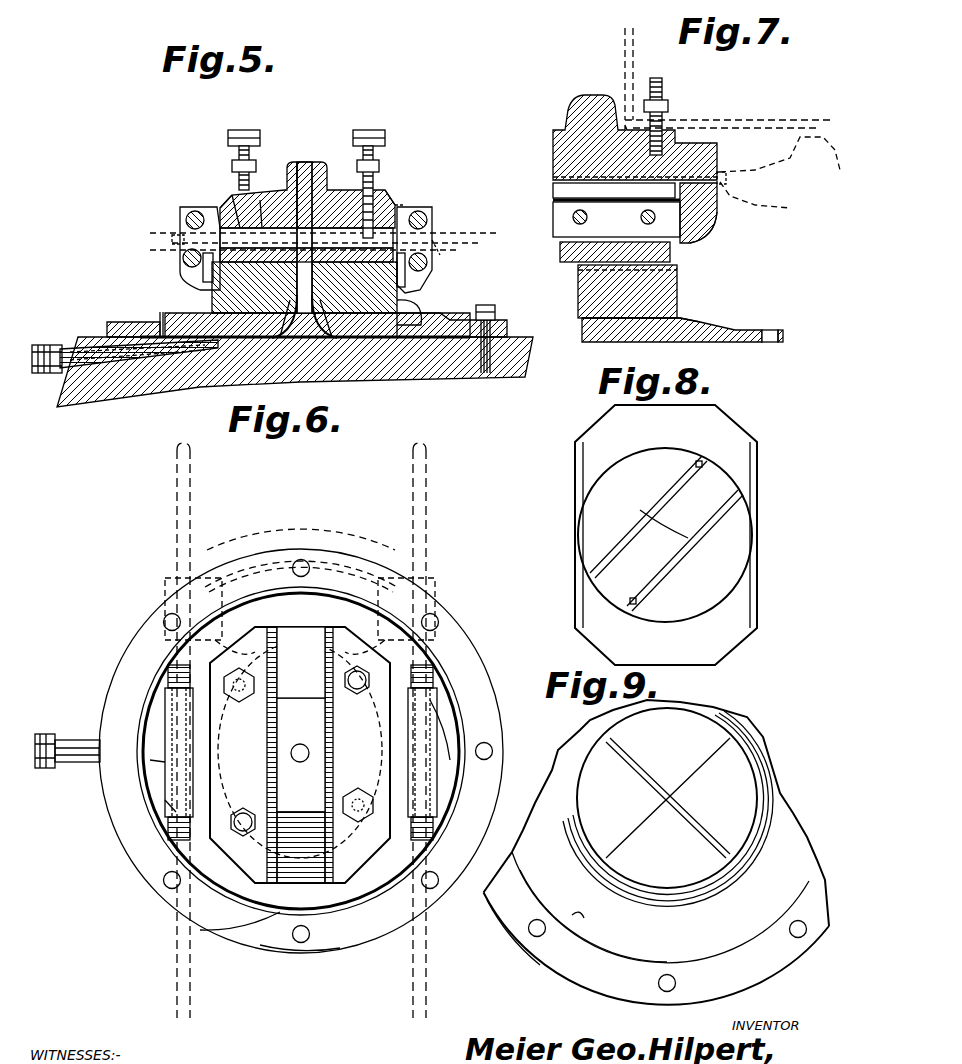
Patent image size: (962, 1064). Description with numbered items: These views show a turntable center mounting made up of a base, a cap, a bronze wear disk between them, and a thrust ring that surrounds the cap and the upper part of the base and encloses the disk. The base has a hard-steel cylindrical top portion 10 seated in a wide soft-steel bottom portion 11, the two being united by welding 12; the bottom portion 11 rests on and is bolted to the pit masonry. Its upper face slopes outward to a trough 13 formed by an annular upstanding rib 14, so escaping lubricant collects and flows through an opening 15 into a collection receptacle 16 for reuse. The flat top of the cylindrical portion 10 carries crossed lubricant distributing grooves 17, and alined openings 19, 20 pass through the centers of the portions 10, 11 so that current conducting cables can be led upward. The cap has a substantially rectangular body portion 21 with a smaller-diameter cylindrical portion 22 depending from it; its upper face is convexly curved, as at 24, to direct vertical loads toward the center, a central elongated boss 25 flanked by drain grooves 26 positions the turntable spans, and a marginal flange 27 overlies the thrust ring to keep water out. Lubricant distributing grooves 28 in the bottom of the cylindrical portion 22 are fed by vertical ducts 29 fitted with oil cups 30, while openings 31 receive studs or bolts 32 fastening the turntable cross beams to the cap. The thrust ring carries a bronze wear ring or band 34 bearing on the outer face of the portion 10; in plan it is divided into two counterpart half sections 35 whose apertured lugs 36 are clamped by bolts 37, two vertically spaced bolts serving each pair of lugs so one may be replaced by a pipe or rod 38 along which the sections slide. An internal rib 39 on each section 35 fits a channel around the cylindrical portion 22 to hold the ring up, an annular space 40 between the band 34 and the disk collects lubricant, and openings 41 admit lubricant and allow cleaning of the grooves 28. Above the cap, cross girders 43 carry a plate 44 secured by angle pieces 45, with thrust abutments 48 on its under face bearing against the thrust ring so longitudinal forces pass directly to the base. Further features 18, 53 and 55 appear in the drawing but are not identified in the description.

In FIG. 5, the cylindrical top portion 10 is at (430, 280).
In FIG. 7, the cylindrical top portion 10 is at (660, 282).
In FIG. 9, the cylindrical top portion 10 is at (668, 807).
In FIG. 5, the bottom portion 11 is at (116, 326).
In FIG. 7, the bottom portion 11 is at (780, 328).
In FIG. 9, the bottom portion 11 is at (510, 920).
In FIG. 6, the bottom portion 11 is at (462, 678).
In FIG. 5, the welding 12 is at (396, 345).
In FIG. 7, the welding 12 is at (682, 318).
In FIG. 5, the trough 13 is at (425, 314).
In FIG. 9, the trough 13 is at (582, 922).
In FIG. 6, the trough 13 is at (168, 800).
In FIG. 5, the annular upstanding rib 14 is at (150, 324).
In FIG. 7, the annular upstanding rib 14 is at (728, 328).
In FIG. 9, the annular upstanding rib 14 is at (640, 954).
In FIG. 6, the annular upstanding rib 14 is at (160, 688).
In FIG. 5, the opening 15 is at (163, 320).
In FIG. 6, the opening 15 is at (152, 766).
In FIG. 5, the collection receptacle 16 is at (52, 348).
In FIG. 6, the collection receptacle 16 is at (60, 740).
In FIG. 5, the lubricant distributing grooves 17 is at (304, 330).
In FIG. 9, the lubricant distributing grooves 17 is at (696, 765).
In FIG. 5, the drain passage 18 is at (250, 335).
In FIG. 5, the opening 19 is at (286, 345).
In FIG. 5, the opening 20 is at (330, 342).
In FIG. 5, the body portion 21 is at (262, 215).
In FIG. 8, the body portion 21 is at (665, 535).
In FIG. 6, the body portion 21 is at (307, 857).
In FIG. 5, the cylindrical portion 22 is at (382, 240).
In FIG. 7, the cylindrical portion 22 is at (614, 190).
In FIG. 8, the cylindrical portion 22 is at (666, 533).
In FIG. 5, the convexly curved upper face 24 is at (386, 252).
In FIG. 7, the convexly curved upper face 24 is at (616, 218).
In FIG. 5, the central upstanding lug or boss 25 is at (244, 212).
In FIG. 6, the central upstanding lug or boss 25 is at (298, 712).
In FIG. 5, the drain groove 26 is at (368, 130).
In FIG. 6, the drain groove 26 is at (272, 758).
In FIG. 5, the marginal outwardly directed flange 27 is at (216, 206).
In FIG. 8, the marginal outwardly directed flange 27 is at (577, 478).
In FIG. 8, the lubricant distributing grooves 28 is at (654, 512).
In FIG. 5, the ducts 29 is at (406, 204).
In FIG. 8, the ducts 29 is at (694, 466).
In FIG. 5, the oil cups 30 is at (246, 130).
In FIG. 6, the oil cups 30 is at (238, 704).
In FIG. 5, the openings 31 is at (240, 164).
In FIG. 7, the openings 31 is at (664, 128).
In FIG. 7, the studs or bolts 32 is at (666, 92).
In FIG. 6, the studs or bolts 32 is at (357, 670).
In FIG. 5, the wear ring or band 34 is at (442, 258).
In FIG. 7, the wear ring or band 34 is at (702, 224).
In FIG. 6, the half sections 35 is at (298, 528).
In FIG. 6, the apertured lugs 36 is at (164, 720).
In FIG. 5, the bolts 37 is at (180, 218).
In FIG. 6, the bolts 37 is at (250, 900).
In FIG. 6, the pipes or rods 38 is at (178, 478).
In FIG. 5, the rib 39 is at (172, 236).
In FIG. 6, the rib 39 is at (340, 570).
In FIG. 5, the annular space 40 is at (203, 266).
In FIG. 5, the opening 41 is at (182, 251).
In FIG. 7, the opening 41 is at (728, 185).
In FIG. 7, the cross girders 43 is at (622, 54).
In FIG. 7, the plate 44 is at (766, 122).
In FIG. 7, the angle pieces 45 is at (642, 76).
In FIG. 7, the thrust abutments 48 is at (780, 172).
In FIG. 5, the central bore 53 is at (303, 200).
In FIG. 6, the central bore 53 is at (308, 748).
In FIG. 6, the clamp nut 55 is at (175, 838).